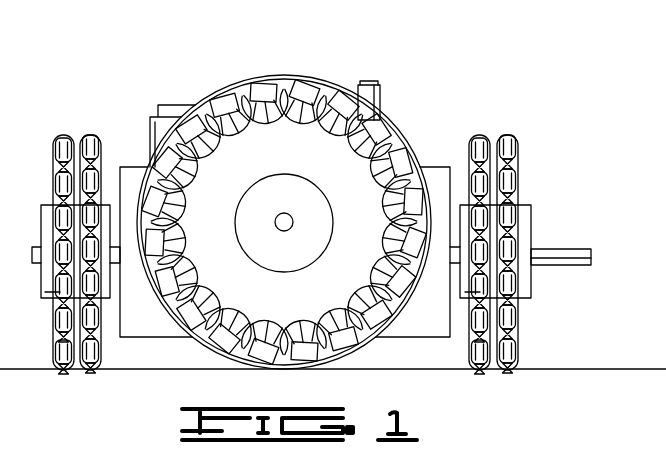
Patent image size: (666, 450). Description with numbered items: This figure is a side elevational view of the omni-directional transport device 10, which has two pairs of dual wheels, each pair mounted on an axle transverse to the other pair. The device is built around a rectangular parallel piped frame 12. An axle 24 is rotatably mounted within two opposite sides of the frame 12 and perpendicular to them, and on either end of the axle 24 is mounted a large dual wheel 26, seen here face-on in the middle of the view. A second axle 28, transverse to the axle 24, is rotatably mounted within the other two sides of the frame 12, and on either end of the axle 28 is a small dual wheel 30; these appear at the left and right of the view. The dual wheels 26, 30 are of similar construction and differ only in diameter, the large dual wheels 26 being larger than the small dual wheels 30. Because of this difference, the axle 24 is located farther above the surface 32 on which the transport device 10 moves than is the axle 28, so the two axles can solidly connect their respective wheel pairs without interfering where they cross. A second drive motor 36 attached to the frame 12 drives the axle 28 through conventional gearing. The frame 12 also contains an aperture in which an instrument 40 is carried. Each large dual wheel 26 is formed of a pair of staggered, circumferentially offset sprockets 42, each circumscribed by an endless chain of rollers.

The omni-directional transport device 10 is at (473, 86).
The frame 12 is at (432, 167).
The axle 24 is at (284, 214).
The large dual wheel 26 is at (302, 82).
The second axle 28 is at (564, 250).
The small dual wheel 30 is at (67, 128).
The surface 32 is at (574, 369).
The second drive motor 36 is at (148, 132).
The instrument 40 is at (382, 94).
The sprocket 42 is at (262, 155).